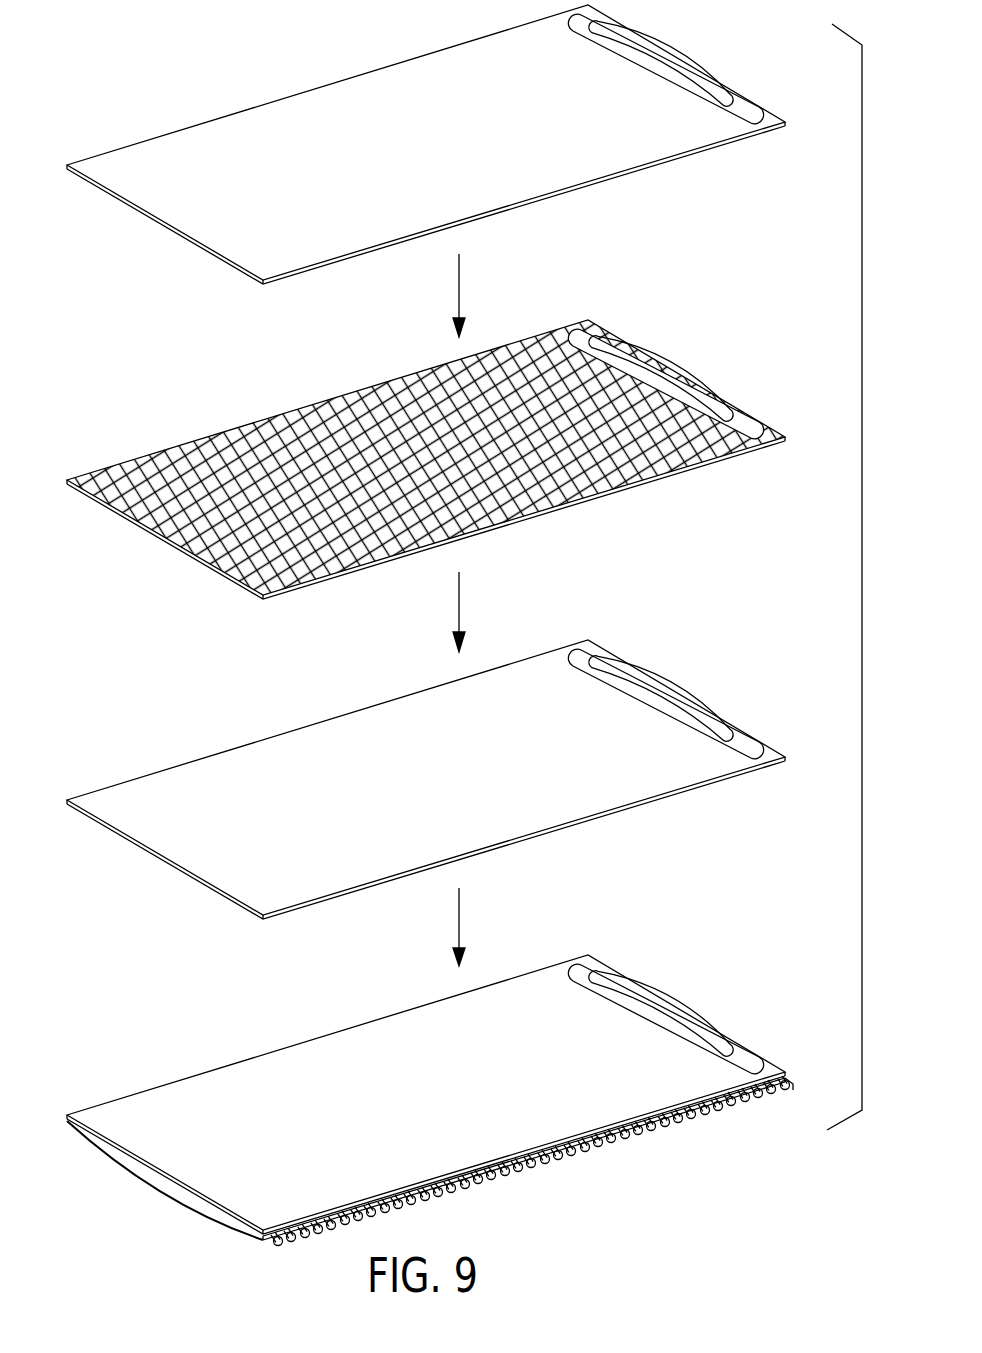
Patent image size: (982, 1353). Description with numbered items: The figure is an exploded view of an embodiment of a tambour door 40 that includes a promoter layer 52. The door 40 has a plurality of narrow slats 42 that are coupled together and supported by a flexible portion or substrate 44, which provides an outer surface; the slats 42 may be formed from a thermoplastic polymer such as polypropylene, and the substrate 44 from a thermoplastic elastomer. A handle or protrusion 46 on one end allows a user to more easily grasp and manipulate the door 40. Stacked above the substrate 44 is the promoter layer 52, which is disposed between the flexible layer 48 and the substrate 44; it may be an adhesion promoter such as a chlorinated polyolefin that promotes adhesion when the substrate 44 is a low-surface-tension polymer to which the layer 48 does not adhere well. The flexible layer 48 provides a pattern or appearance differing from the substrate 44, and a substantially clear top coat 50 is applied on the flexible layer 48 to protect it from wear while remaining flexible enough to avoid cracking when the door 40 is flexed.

The door 40 is at (106, 1009).
The slats 42 is at (280, 1250).
The substrate 44 is at (363, 1050).
The handle 46 is at (630, 972).
The flexible layer 48 is at (446, 459).
The top coat 50 is at (747, 118).
The promoter layer 52 is at (446, 779).